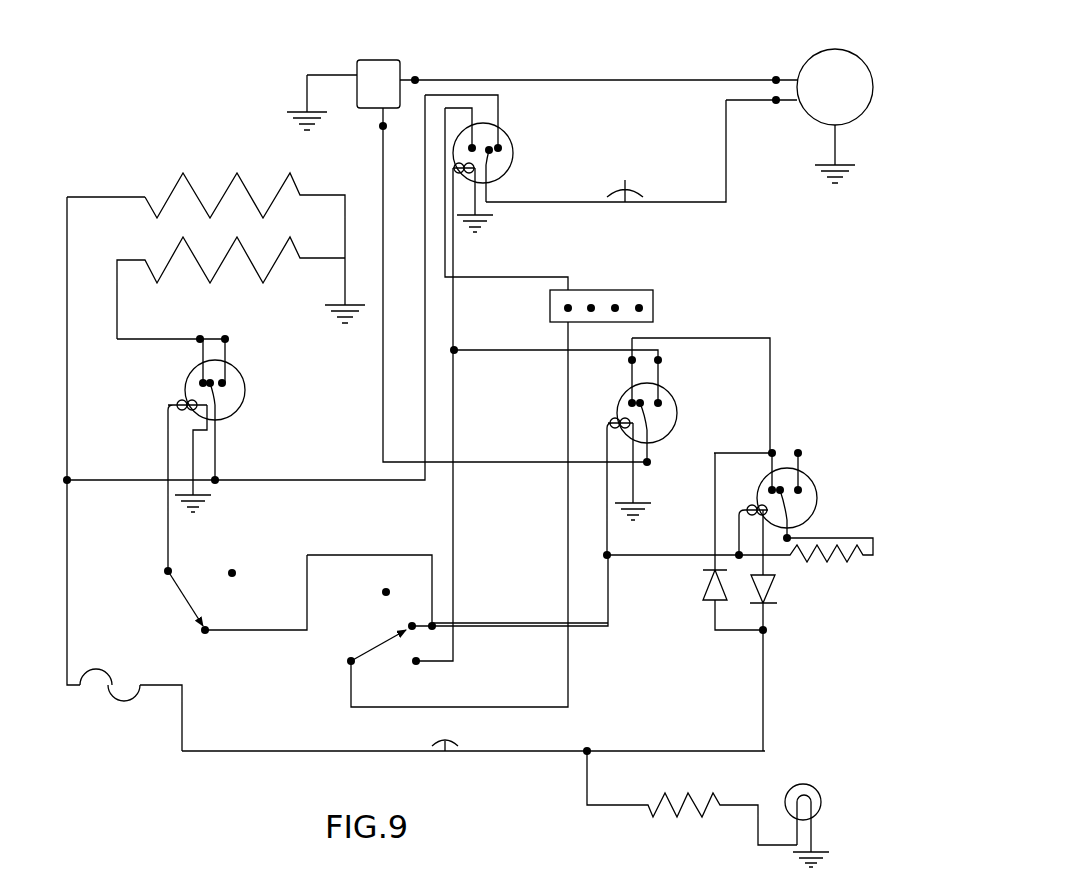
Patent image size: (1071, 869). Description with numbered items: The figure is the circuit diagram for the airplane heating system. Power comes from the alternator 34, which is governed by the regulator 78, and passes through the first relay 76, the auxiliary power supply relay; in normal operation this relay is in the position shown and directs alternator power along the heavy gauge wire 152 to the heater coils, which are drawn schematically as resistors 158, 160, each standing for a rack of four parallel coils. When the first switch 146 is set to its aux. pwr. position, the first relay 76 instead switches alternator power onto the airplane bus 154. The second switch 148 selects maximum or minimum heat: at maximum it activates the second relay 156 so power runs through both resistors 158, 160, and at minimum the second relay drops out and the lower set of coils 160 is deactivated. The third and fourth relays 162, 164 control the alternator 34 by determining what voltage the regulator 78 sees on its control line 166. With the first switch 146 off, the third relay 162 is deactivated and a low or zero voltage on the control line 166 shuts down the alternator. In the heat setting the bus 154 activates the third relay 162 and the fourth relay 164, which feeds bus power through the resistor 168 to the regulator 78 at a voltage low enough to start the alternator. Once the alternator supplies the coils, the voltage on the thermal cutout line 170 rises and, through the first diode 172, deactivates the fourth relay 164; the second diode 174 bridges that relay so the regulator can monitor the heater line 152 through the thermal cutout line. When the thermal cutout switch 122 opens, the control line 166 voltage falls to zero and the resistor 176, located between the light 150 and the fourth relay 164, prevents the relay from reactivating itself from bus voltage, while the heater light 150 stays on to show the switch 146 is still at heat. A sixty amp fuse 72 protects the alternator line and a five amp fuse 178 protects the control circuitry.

The alternator 34 is at (840, 45).
The 60 amp fuse 72 is at (625, 186).
The first relay 76 is at (505, 119).
The regulator 78 is at (392, 56).
The thermal cutout switch 122 is at (127, 715).
The first switch 146 is at (314, 716).
The second switch 148 is at (136, 631).
The light 150 is at (812, 784).
The heavy gauge wire 152 is at (244, 289).
The airplane bus 154 is at (635, 284).
The second relay 156 is at (240, 363).
The resistor 158 is at (243, 170).
The resistor 160 is at (243, 311).
The third relay 162 is at (679, 421).
The fourth relay 164 is at (802, 468).
The control line 166 is at (383, 157).
The resistor 168 is at (849, 590).
The thermal cutout line 170 is at (67, 590).
The first diode 172 is at (773, 599).
The second diode 174 is at (701, 592).
The resistor 176 is at (703, 840).
The 5 amp fuse 178 is at (452, 755).